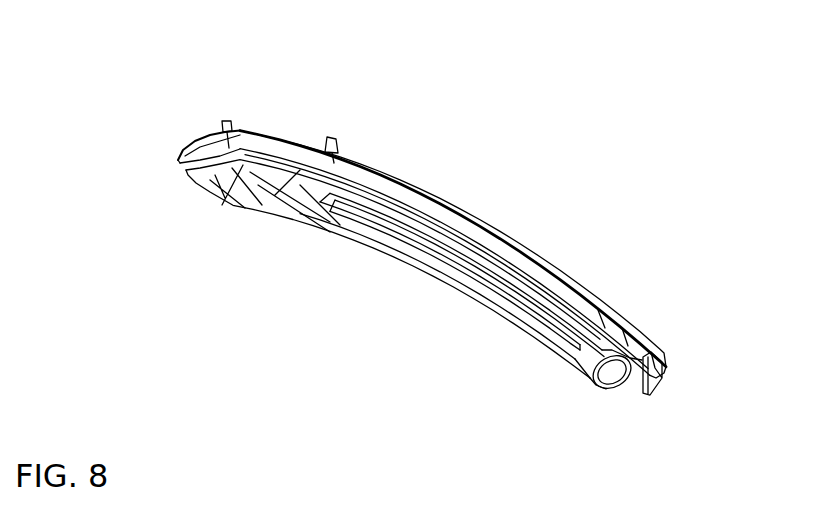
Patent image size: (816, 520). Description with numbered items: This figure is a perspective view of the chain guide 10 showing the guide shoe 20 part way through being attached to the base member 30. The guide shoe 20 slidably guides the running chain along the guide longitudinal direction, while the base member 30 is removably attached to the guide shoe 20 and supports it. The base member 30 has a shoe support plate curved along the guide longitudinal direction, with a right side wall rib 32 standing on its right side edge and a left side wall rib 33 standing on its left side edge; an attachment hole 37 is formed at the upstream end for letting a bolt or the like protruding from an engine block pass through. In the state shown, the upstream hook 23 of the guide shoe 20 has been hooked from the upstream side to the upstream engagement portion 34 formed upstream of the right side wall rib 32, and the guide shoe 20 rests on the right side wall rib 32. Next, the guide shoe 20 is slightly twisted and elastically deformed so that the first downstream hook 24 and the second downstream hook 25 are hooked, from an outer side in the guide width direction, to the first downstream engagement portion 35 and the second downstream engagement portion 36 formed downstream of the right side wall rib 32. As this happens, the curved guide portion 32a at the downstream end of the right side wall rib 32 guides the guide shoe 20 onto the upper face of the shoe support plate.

The chain guide 10 is at (127, 96).
The guide shoe 20 is at (627, 328).
The upstream hook 23 is at (659, 380).
The upstream engagement portion 34 is at (693, 407).
The first downstream hook 24 is at (233, 123).
The first downstream engagement portion 35 is at (252, 94).
The second downstream hook 25 is at (340, 148).
The second downstream engagement portion 36 is at (365, 109).
The base member 30 is at (390, 255).
The right side wall rib 32 is at (521, 246).
The curved guide portion 32a is at (408, 184).
The left side wall rib 33 is at (490, 257).
The attachment hole 37 is at (612, 375).